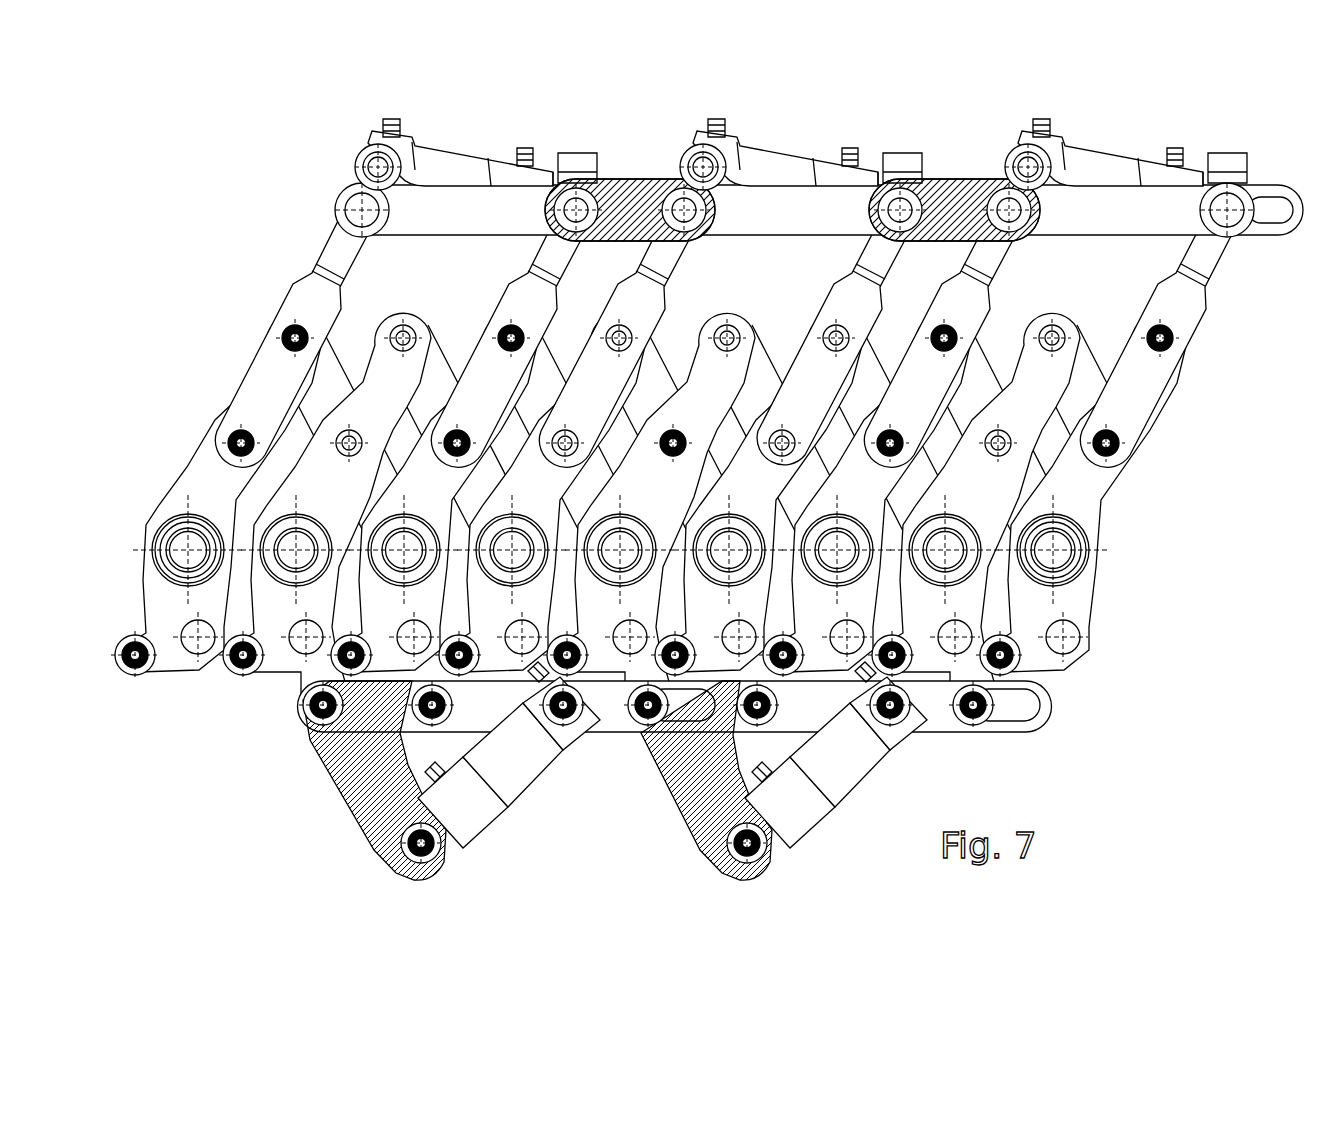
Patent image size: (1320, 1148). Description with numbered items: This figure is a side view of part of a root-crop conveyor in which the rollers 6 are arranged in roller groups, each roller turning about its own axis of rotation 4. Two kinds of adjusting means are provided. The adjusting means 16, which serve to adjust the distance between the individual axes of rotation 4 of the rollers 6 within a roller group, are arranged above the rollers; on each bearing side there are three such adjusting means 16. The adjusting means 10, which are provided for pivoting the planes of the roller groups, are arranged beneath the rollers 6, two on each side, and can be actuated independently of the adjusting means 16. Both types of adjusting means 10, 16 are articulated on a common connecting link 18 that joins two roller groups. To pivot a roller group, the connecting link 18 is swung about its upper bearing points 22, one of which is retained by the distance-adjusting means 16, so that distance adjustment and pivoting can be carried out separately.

The axis of rotation 4 is at (187, 550).
The roller 6 is at (152, 520).
The adjusting means 10 is at (507, 768).
The adjusting means 16 is at (457, 166).
The connecting link 18 is at (365, 785).
The bearing point 22 is at (647, 710).